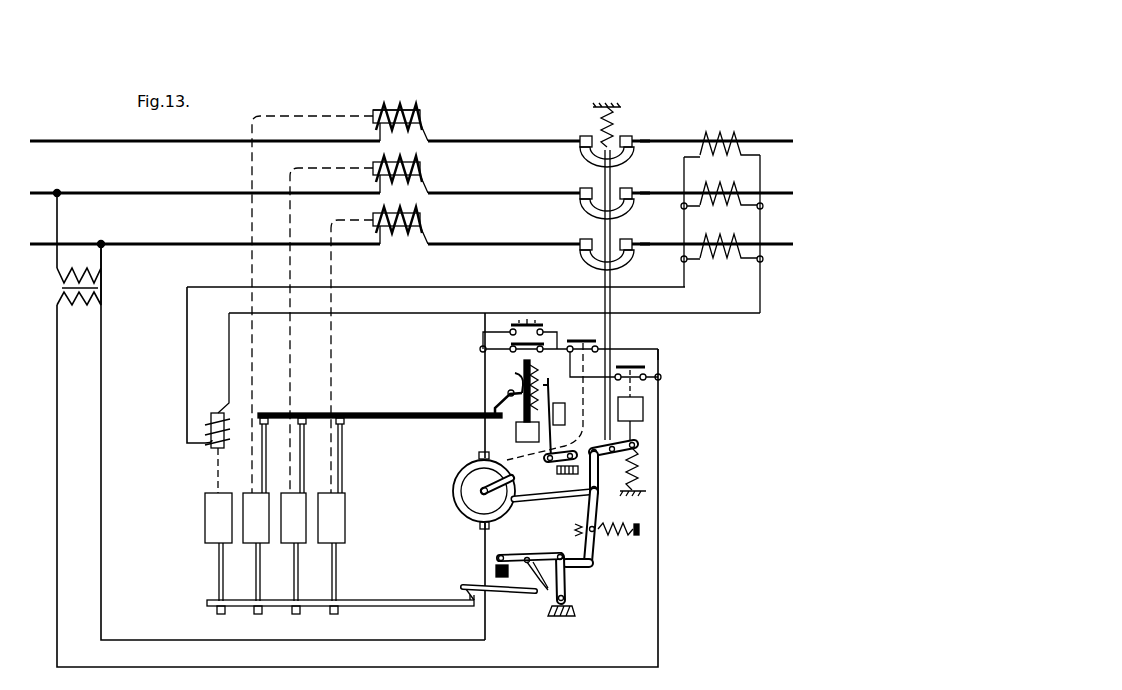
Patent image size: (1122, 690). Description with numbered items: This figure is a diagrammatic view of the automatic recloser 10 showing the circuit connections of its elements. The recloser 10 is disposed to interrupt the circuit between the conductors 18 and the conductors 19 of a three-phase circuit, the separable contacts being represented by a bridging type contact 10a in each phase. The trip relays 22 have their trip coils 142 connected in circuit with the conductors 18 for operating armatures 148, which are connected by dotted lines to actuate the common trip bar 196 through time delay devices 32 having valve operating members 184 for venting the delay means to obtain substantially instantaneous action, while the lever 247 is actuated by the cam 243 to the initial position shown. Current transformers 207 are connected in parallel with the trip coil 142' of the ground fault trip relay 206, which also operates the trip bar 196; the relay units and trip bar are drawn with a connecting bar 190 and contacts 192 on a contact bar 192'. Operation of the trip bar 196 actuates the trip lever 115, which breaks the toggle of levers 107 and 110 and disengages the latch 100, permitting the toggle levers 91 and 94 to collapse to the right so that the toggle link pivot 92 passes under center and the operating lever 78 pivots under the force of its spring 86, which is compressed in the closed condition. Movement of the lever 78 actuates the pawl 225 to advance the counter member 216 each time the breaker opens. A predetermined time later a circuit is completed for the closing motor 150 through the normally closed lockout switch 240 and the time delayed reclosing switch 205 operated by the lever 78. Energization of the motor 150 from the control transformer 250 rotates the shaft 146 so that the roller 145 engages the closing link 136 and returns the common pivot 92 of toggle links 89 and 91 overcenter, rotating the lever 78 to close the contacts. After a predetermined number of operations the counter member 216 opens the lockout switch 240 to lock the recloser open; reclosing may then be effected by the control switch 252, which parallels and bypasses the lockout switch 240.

The recloser 10 is at (754, 350).
The bridging type contact 10a is at (596, 161).
The conductors 18 is at (513, 141).
The conductors 19 is at (651, 141).
The trip relays 22 is at (434, 90).
The time delay devices 32 is at (345, 526).
The operating lever 78 is at (638, 446).
The spring 86 is at (613, 126).
The toggle link 89 is at (593, 451).
The toggle lever 91 is at (600, 512).
The toggle link pivot 92 is at (583, 509).
The toggle lever 94 is at (597, 543).
The latch 100 is at (577, 580).
The toggle lever 107 is at (530, 553).
The toggle lever 110 is at (520, 553).
The trip lever 115 is at (497, 594).
The closing link 136 is at (543, 508).
The trip coils 142 is at (420, 174).
The trip coil 142' is at (211, 403).
The roller 145 is at (511, 485).
The shaft 146 is at (454, 487).
The armatures 148 is at (373, 111).
The closing motor 150 is at (462, 536).
The valve operating members 184 is at (343, 449).
The bar 190 is at (385, 414).
The contacts 192 is at (277, 625).
The contact bar 192' is at (317, 610).
The common trip bar 196 is at (385, 600).
The time delayed reclosing switch 205 is at (643, 411).
The ground fault trip relay 206 is at (205, 528).
The current transformers 207 is at (722, 134).
The counter member 216 is at (531, 372).
The pawl 225 is at (551, 387).
The lockout switch 240 is at (480, 349).
The cam 243 is at (519, 380).
The lever 247 is at (497, 392).
The control transformer 250 is at (101, 288).
The control switch 252 is at (510, 325).